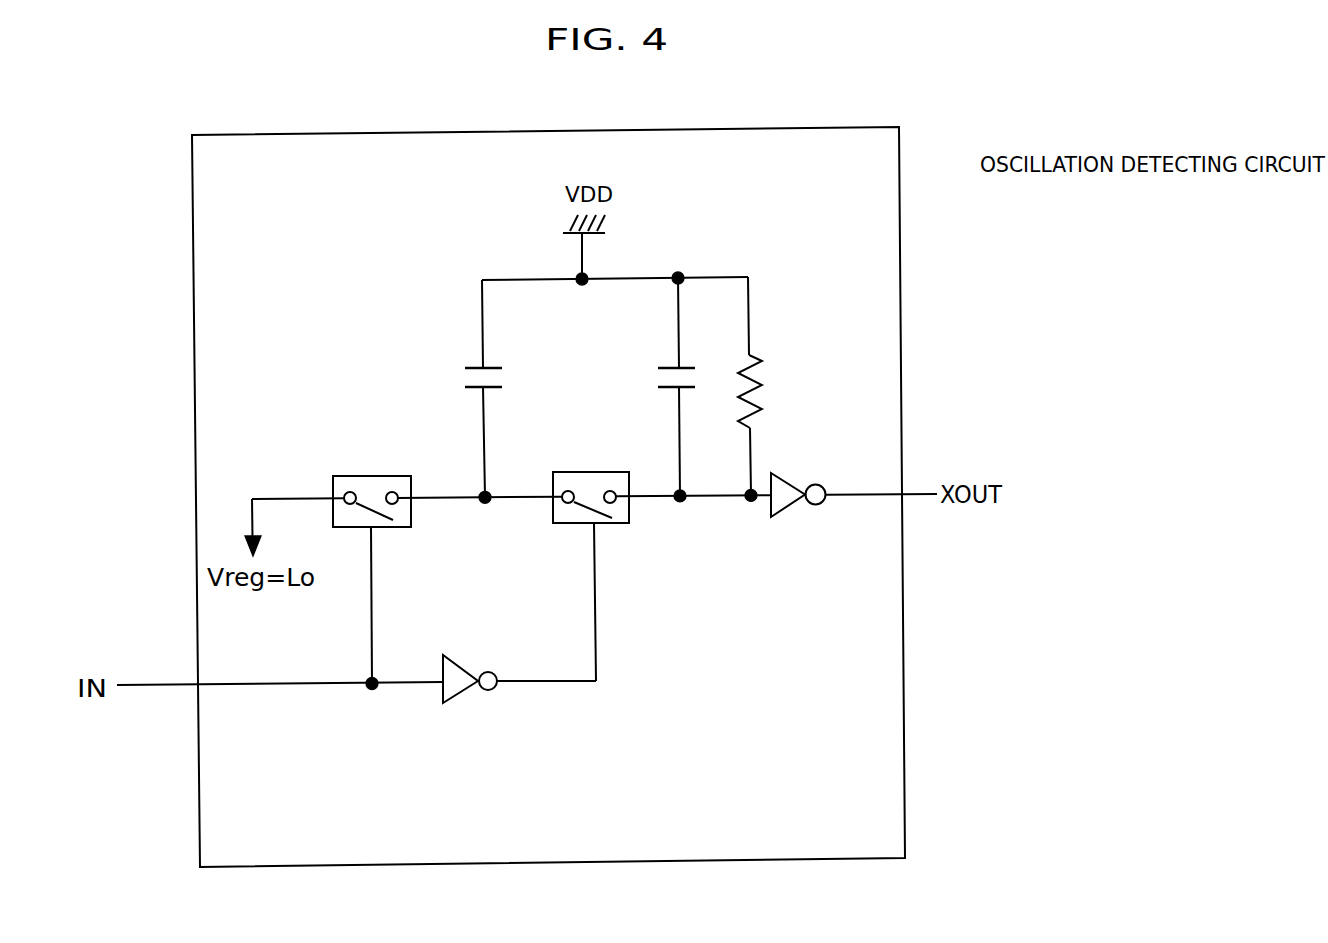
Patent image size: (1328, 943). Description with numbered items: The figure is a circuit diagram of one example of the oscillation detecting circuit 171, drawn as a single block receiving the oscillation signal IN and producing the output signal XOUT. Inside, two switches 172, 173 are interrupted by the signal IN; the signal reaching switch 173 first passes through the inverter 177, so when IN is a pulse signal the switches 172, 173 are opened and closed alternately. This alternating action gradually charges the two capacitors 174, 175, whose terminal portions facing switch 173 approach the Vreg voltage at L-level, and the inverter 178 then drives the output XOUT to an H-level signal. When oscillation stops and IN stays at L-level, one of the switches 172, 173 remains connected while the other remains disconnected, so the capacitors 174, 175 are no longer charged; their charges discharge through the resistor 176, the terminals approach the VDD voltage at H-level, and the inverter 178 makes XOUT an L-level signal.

The oscillation detecting circuit 171 is at (899, 236).
The switch 172 is at (375, 476).
The switch 173 is at (600, 472).
The capacitor 174 is at (473, 368).
The capacitor 175 is at (666, 368).
The resistor 176 is at (757, 372).
The inverter 177 is at (462, 700).
The inverter 178 is at (786, 518).